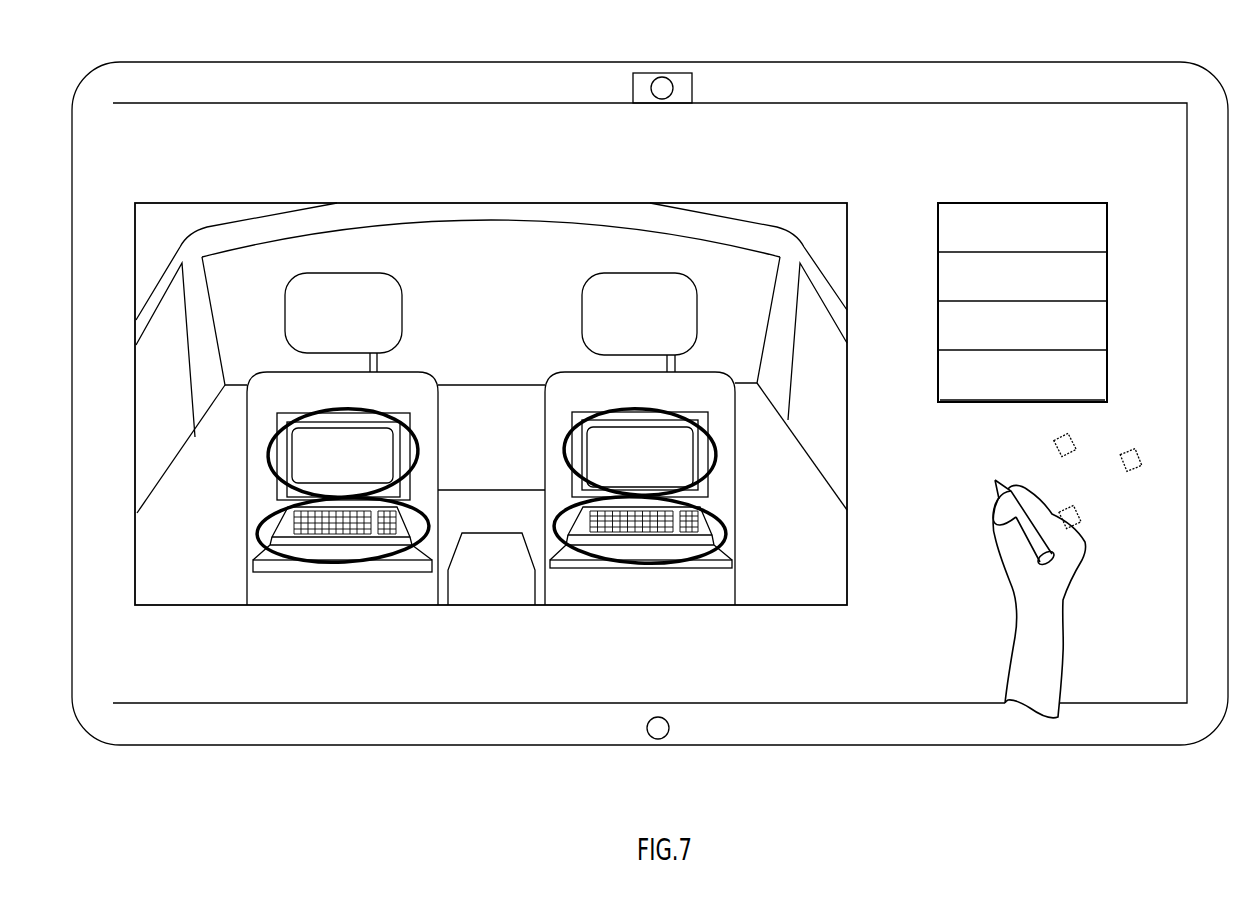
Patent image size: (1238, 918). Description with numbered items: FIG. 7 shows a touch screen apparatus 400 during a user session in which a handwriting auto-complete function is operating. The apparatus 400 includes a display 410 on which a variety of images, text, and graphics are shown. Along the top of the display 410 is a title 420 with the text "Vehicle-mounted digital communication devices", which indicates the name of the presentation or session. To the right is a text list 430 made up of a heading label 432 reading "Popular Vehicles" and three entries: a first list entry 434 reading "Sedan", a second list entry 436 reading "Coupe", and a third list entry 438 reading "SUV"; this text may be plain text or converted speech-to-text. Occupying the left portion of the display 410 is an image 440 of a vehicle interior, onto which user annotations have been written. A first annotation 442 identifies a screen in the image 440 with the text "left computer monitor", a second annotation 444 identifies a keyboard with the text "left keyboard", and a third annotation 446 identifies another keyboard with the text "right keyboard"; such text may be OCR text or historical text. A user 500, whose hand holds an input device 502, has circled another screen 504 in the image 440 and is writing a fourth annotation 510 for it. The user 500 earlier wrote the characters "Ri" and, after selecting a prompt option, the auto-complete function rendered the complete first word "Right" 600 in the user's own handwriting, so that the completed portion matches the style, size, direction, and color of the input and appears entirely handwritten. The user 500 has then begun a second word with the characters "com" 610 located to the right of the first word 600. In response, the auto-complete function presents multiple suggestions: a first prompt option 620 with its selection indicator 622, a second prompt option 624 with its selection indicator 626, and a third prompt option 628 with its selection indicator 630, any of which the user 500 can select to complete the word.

The apparatus 400 is at (1070, 63).
The display 410 is at (205, 133).
The title 420 is at (577, 138).
The text list 430 is at (1056, 268).
The heading label 432 is at (1097, 230).
The first list entry 434 is at (1095, 275).
The second list entry 436 is at (1095, 328).
The third list entry 438 is at (1097, 370).
The image 440 is at (153, 578).
The first annotation 442 is at (228, 398).
The second annotation 444 is at (202, 570).
The third annotation 446 is at (763, 597).
The screen 504 is at (715, 457).
The user 500 is at (1067, 599).
The input device 502 is at (1047, 560).
The fourth annotation 510 is at (883, 507).
The first word 600 is at (1044, 509).
The characters 610 is at (965, 470).
The first prompt option 620 is at (1017, 443).
The selection indicator 622 is at (1073, 442).
The second prompt option 624 is at (957, 517).
The selection indicator 626 is at (1140, 452).
The third prompt option 628 is at (983, 555).
The selection indicator 630 is at (1070, 517).